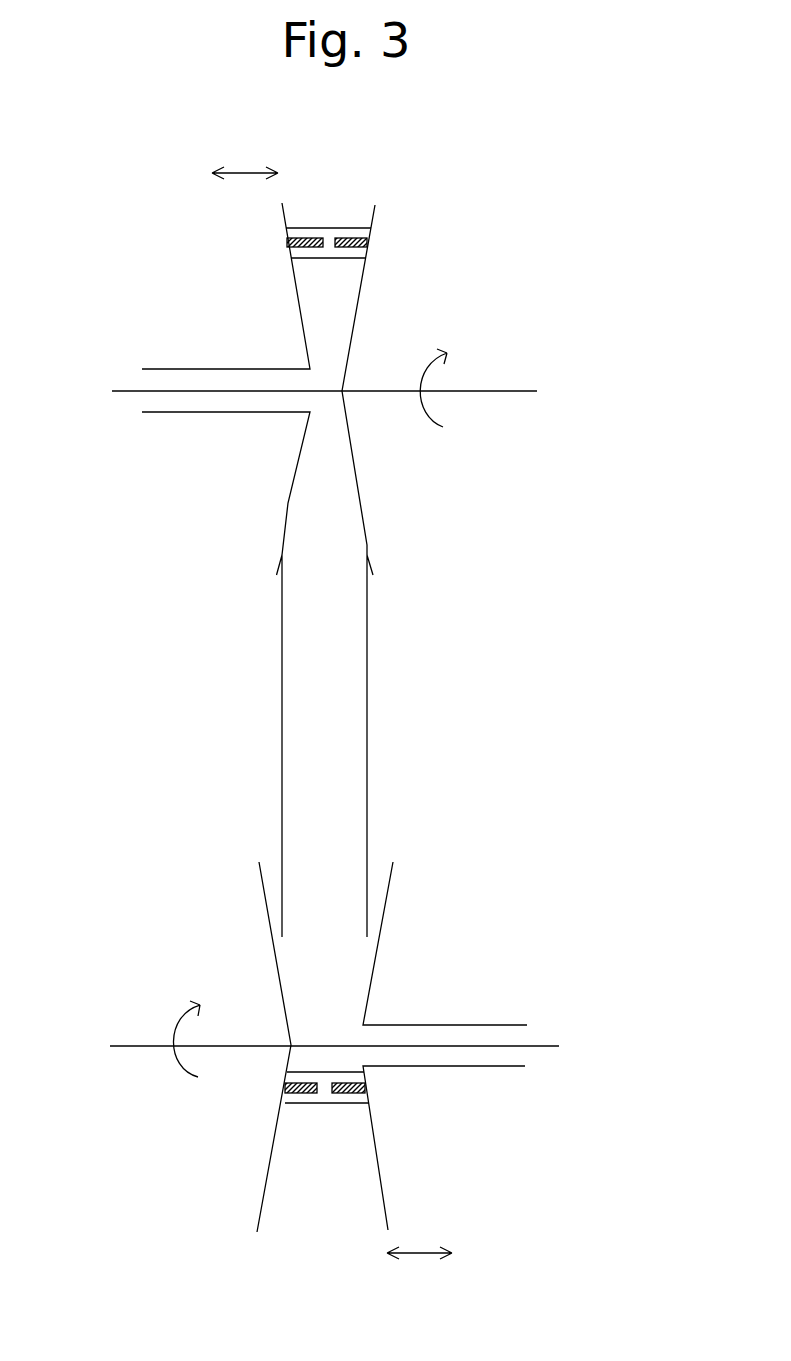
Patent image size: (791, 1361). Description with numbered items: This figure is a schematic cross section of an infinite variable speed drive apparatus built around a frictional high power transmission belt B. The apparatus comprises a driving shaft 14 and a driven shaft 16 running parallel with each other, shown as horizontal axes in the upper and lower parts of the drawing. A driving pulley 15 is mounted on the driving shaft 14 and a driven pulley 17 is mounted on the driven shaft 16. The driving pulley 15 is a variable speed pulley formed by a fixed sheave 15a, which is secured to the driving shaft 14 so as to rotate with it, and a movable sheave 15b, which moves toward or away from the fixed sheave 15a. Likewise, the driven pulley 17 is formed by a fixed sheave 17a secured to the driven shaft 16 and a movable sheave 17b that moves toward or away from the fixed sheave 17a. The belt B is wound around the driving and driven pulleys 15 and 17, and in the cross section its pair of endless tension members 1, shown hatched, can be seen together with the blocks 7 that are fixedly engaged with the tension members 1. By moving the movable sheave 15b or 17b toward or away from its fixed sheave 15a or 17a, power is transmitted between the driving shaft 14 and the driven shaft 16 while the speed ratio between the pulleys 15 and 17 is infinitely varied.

The tension member 1 is at (311, 242).
The block 7 is at (330, 228).
The driving shaft 14 is at (512, 390).
The driving pulley 15 is at (309, 343).
The fixed sheave 15a is at (360, 302).
The movable sheave 15b is at (290, 303).
The driven shaft 16 is at (127, 1045).
The driven pulley 17 is at (331, 1076).
The fixed sheave 17a is at (265, 1178).
The movable sheave 17b is at (378, 1162).
The high power transmission belt B is at (380, 739).